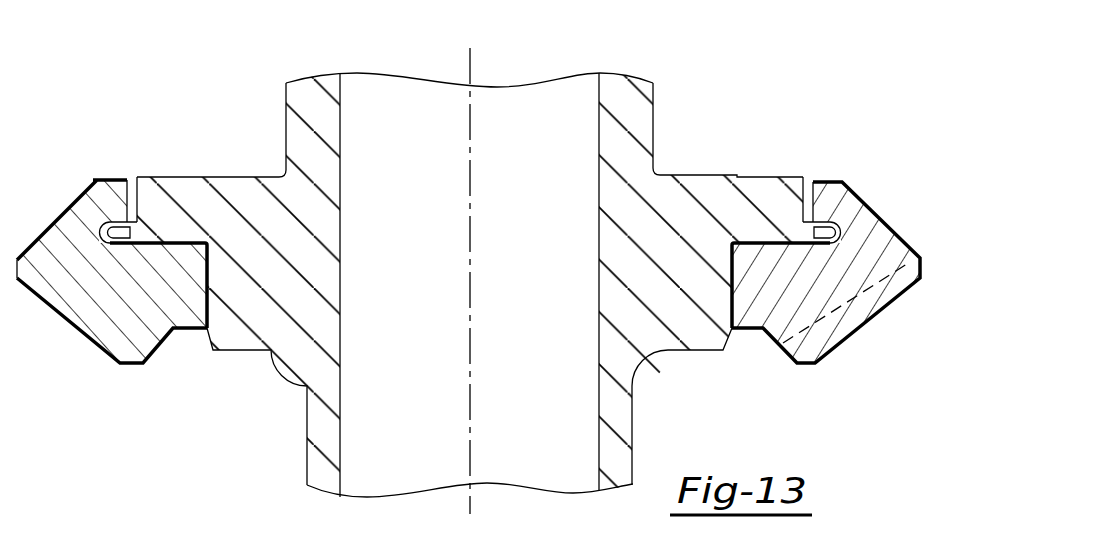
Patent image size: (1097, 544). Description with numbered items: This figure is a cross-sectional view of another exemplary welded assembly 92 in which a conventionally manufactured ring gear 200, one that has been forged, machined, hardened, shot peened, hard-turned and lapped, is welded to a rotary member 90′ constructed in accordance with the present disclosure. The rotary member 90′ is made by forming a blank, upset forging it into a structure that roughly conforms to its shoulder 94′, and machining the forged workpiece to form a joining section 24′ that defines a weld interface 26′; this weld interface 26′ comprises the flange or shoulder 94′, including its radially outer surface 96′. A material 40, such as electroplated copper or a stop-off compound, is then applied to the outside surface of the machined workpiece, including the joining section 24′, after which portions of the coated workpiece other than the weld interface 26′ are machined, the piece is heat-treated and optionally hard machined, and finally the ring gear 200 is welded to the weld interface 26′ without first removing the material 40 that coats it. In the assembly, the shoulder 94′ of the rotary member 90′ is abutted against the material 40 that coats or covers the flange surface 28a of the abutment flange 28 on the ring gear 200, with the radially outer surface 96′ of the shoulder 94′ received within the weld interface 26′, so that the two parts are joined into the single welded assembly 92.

The welded assembly 92 is at (666, 73).
The rotary member 90′ is at (322, 117).
The abutment flange 28 is at (186, 288).
The flange surface 28a is at (172, 241).
The ring gear 200 is at (86, 318).
The joining section 24′ is at (129, 258).
The weld interface 26′ is at (117, 204).
The material 40 is at (199, 243).
The radially outer surface 96′ is at (136, 218).
The shoulder 94′ is at (168, 195).